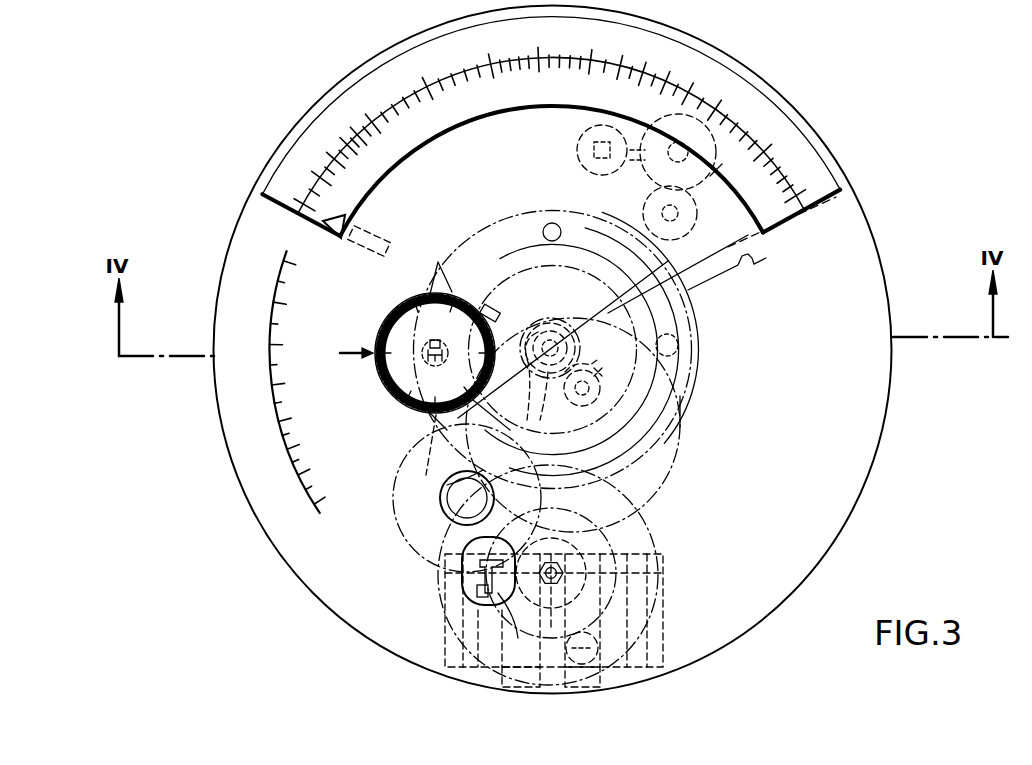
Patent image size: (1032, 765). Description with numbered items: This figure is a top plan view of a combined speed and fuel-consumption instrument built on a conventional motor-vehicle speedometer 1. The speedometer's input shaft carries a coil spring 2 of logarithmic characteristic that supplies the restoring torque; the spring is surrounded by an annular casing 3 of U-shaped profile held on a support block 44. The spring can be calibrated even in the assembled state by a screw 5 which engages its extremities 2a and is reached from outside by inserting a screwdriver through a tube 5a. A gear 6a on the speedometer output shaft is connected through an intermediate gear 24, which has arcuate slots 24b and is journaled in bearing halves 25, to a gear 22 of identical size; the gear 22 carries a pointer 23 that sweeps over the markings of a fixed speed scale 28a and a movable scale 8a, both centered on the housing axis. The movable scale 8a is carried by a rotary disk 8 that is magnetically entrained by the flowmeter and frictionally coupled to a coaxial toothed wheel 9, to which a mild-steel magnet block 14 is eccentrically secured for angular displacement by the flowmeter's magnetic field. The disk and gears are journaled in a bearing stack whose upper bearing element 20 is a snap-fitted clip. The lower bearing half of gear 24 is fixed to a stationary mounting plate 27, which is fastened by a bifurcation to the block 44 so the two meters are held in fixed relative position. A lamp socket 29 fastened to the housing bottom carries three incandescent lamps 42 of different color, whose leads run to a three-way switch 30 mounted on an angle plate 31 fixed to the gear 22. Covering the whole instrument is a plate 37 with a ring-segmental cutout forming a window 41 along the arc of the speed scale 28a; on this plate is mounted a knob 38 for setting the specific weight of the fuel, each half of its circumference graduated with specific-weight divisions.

The speedometer 1 is at (640, 613).
The coil spring 2 is at (493, 598).
The extremities of the coil spring 2a is at (503, 567).
The annular casing 3 is at (490, 590).
The screw 5 is at (506, 576).
The tube 5a is at (470, 688).
The gear 6a is at (664, 572).
The rotary disk 8 is at (731, 270).
The movable scale 8a is at (791, 220).
The toothed wheel 9 is at (663, 405).
The magnet block 14 is at (438, 262).
The upper bearing element 20 is at (533, 332).
The gear 22 is at (614, 455).
The pointer 23 is at (353, 218).
The gear 24 is at (410, 545).
The arcuate slots 24b is at (447, 485).
The bearing halves 25 is at (455, 504).
The mounting plate 27 is at (668, 490).
The fixed scale 28a is at (813, 148).
The lamp socket 29 is at (598, 133).
The three-way switch 30 is at (573, 330).
The angle plate 31 is at (597, 372).
The plate 37 is at (893, 381).
The knob 38 is at (407, 322).
The window 41 is at (763, 93).
The incandescent lamps 42 is at (721, 170).
The support block 44 is at (668, 630).